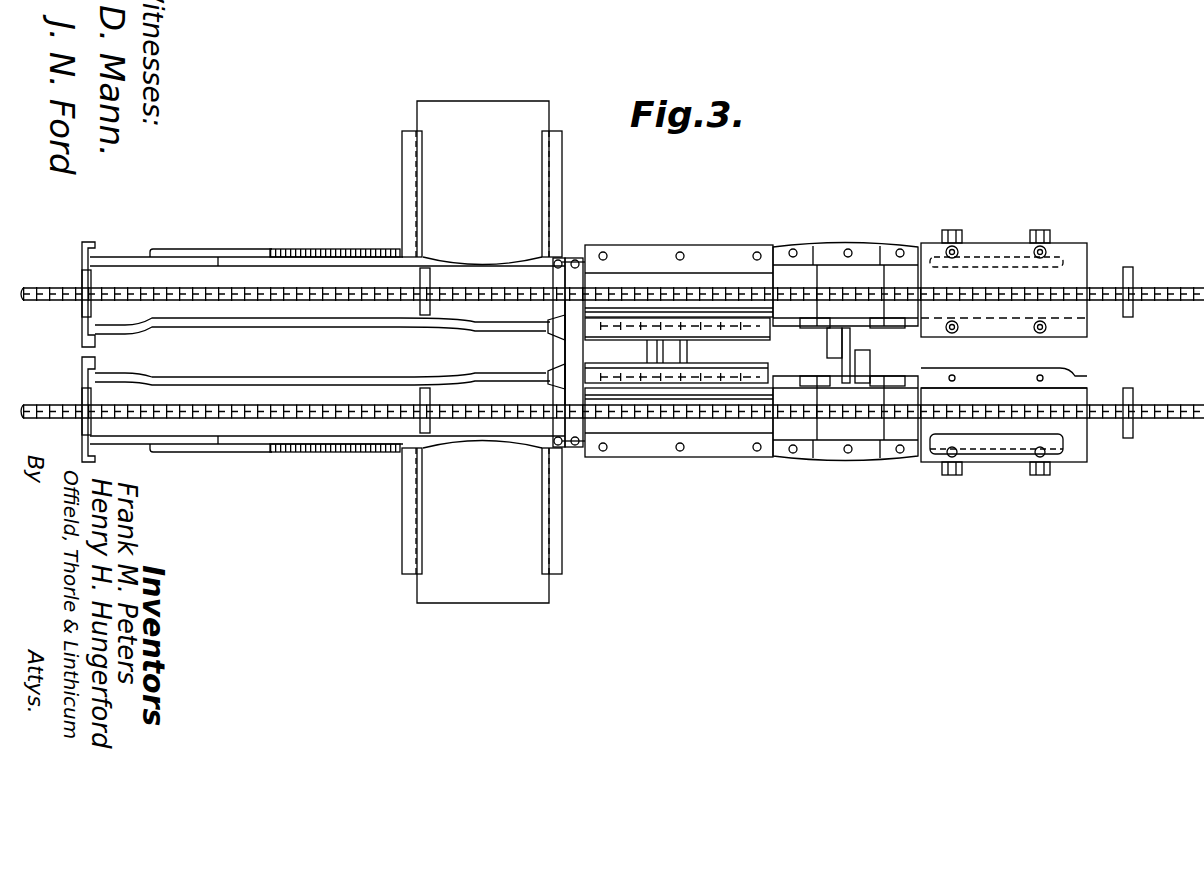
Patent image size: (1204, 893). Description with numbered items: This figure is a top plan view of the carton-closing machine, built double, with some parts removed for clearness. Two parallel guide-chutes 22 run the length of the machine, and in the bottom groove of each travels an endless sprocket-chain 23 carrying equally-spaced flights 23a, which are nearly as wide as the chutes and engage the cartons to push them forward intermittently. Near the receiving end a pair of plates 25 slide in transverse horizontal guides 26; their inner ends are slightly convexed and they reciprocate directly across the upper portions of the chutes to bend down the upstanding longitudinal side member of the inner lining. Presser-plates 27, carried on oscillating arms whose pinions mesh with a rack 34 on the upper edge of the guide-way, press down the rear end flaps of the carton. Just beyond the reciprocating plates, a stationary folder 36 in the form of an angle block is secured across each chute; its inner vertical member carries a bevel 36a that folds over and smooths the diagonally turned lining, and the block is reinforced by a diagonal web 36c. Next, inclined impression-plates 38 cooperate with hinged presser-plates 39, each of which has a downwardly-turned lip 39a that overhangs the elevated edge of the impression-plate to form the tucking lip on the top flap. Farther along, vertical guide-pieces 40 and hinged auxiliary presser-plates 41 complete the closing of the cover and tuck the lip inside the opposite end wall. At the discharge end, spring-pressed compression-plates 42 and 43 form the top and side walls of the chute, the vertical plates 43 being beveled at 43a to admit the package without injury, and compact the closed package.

The guide-chute 22 is at (387, 428).
The endless sprocket-chain 23 is at (243, 288).
The flight 23a is at (432, 400).
The plate 25 is at (483, 352).
The horizontal guide 26 is at (408, 172).
The presser-plate 27 is at (358, 275).
The rack 34 is at (303, 250).
The stationary folder 36 is at (573, 445).
The bevel 36a is at (548, 332).
The diagonal web 36c is at (580, 268).
The impression-plate 38 is at (637, 283).
The presser-plate 39 is at (762, 342).
The lip or flange 39a is at (748, 322).
The guide-piece 40 is at (858, 252).
The auxiliary presser-plate 41 is at (800, 275).
The compression-plate 42 is at (1068, 250).
The compression-plate 43 is at (995, 262).
The beveled end 43a is at (944, 455).